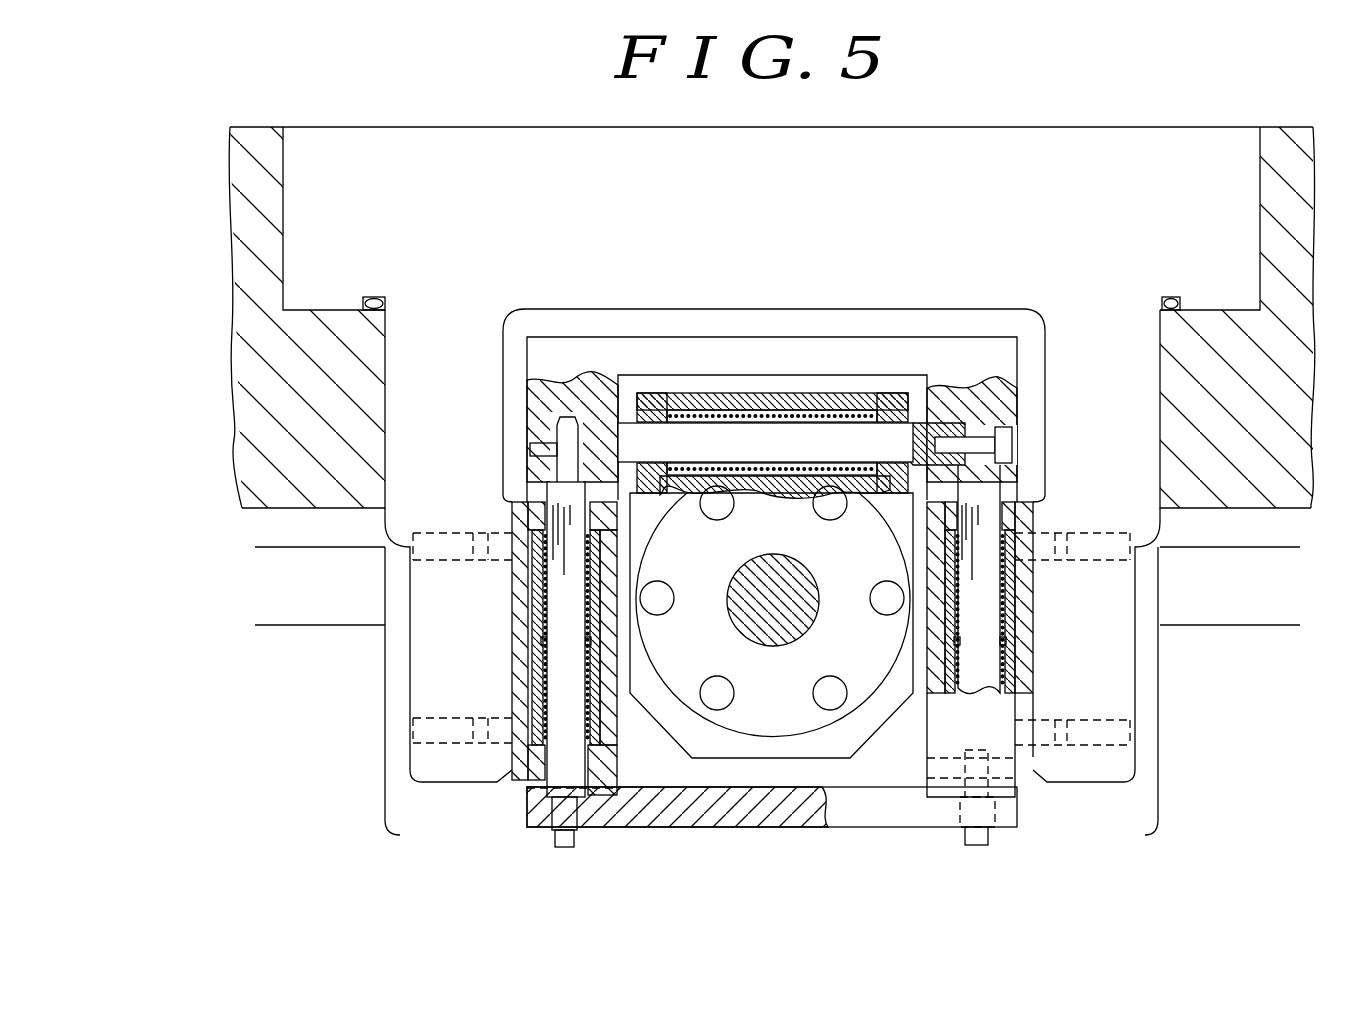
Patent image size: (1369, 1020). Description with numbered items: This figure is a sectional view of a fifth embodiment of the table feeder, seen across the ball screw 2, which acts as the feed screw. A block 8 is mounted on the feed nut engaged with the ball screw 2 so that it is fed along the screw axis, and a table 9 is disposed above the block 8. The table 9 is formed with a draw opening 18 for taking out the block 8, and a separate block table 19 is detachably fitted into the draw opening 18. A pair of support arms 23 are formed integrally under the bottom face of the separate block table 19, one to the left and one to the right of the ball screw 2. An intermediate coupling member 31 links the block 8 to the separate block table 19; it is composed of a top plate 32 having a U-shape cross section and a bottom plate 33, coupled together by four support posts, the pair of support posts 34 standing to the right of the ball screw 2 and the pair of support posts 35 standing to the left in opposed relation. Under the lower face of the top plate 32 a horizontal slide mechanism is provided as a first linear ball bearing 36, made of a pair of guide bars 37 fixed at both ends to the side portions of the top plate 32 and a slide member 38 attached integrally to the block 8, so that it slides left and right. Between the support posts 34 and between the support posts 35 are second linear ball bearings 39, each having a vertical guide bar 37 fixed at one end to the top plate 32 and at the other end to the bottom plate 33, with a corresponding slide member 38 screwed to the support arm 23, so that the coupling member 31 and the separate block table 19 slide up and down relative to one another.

The ball screw 2 is at (770, 630).
The block 8 is at (737, 750).
The table 9 is at (1271, 176).
The draw opening 18 is at (392, 452).
The separate block table 19 is at (590, 190).
The support arm 23 is at (437, 773).
The intermediate coupling member 31 is at (936, 333).
The top plate 32 is at (798, 372).
The bottom plate 33 is at (891, 821).
The support posts 34 is at (1003, 767).
The support posts 35 is at (527, 787).
The first linear ball bearing 36 is at (805, 380).
The guide bar 37 is at (778, 451).
The slide member 38 is at (693, 400).
The second linear ball bearing 39 is at (500, 610).